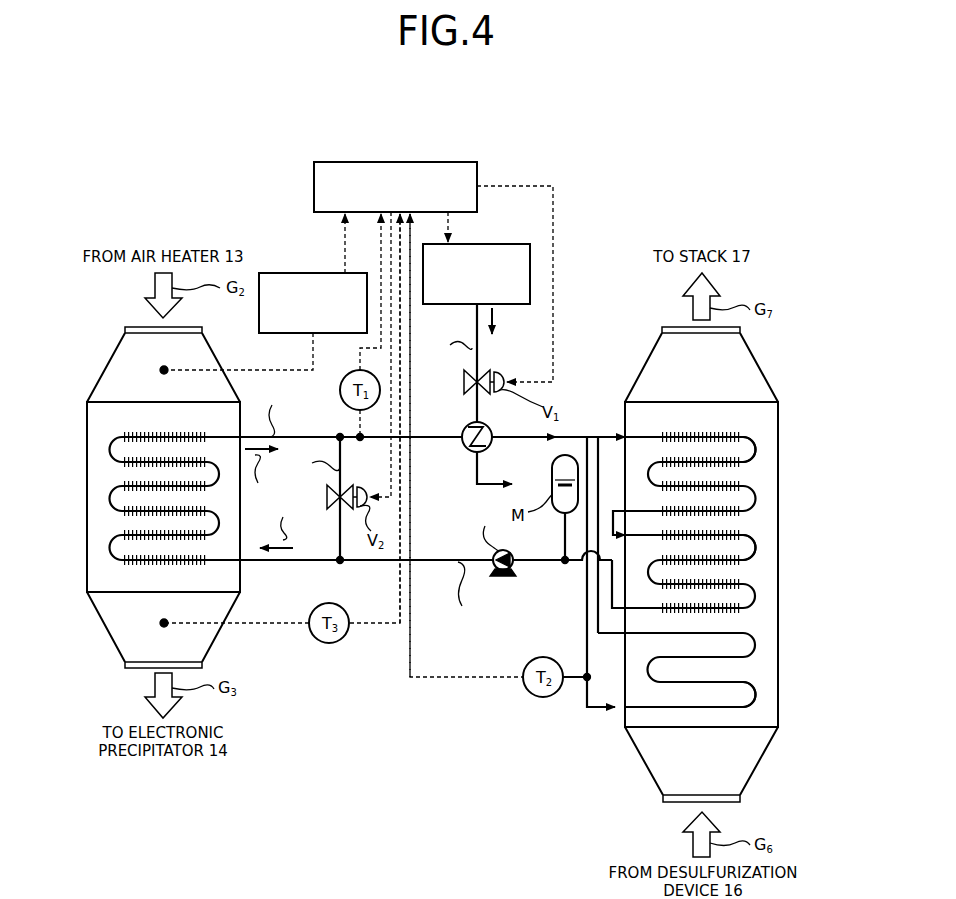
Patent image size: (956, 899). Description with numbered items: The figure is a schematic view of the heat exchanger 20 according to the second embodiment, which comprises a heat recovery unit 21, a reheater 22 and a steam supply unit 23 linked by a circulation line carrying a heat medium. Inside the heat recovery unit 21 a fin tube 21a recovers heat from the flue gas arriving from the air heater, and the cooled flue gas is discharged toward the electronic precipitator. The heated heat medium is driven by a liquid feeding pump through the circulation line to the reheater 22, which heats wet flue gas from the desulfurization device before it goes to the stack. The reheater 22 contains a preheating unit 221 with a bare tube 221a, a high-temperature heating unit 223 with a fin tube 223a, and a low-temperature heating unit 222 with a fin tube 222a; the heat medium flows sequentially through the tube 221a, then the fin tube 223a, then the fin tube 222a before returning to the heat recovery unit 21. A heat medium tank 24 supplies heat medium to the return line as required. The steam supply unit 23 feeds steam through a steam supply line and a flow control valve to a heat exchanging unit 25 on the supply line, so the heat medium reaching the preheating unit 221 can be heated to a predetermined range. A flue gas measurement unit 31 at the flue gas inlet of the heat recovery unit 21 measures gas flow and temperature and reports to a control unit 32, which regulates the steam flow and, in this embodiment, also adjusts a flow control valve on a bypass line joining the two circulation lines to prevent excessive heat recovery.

The heat exchanger 20 is at (270, 158).
The heat recovery unit 21 is at (87, 430).
The fin tube 21a is at (112, 497).
The reheater 22 is at (778, 425).
The preheating unit 221 is at (764, 668).
The tube 221a is at (756, 700).
The low-temperature heating unit 222 is at (764, 568).
The fin tube 222a is at (756, 549).
The high-temperature heating unit 223 is at (764, 467).
The fin tube 223a is at (756, 449).
The steam supply unit 23 is at (487, 245).
The heat medium tank 24 is at (552, 470).
The heat exchanging unit 25 is at (466, 449).
The flue gas measurement unit 31 is at (289, 274).
The control unit 32 is at (404, 163).